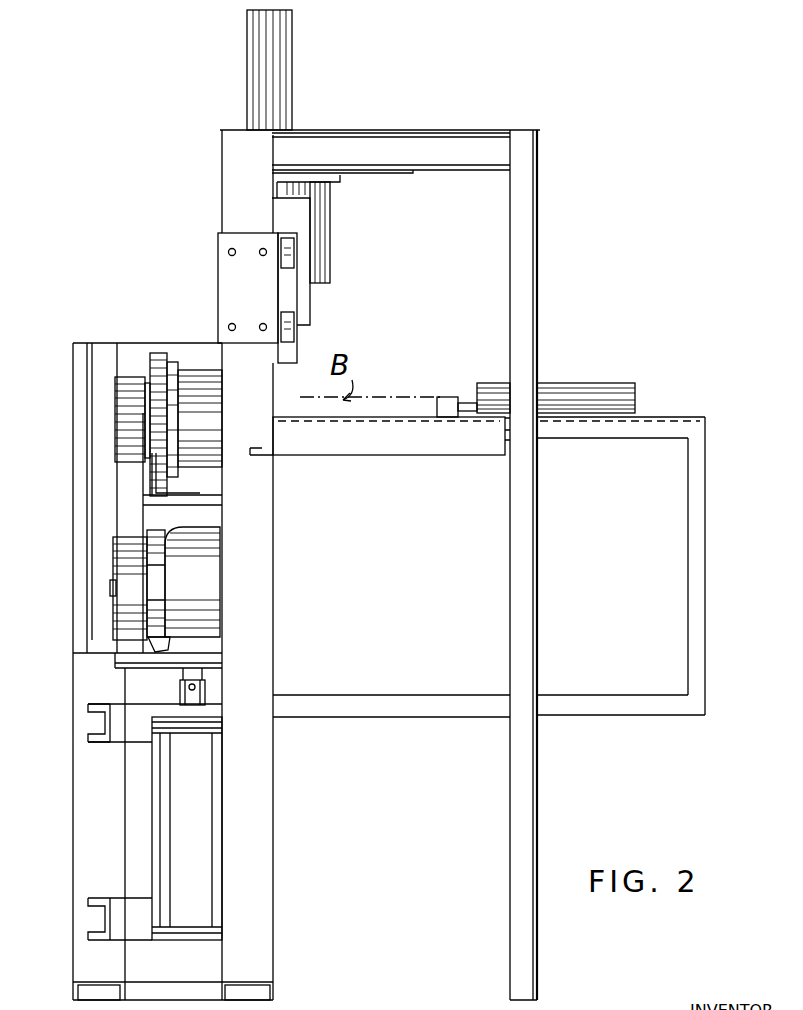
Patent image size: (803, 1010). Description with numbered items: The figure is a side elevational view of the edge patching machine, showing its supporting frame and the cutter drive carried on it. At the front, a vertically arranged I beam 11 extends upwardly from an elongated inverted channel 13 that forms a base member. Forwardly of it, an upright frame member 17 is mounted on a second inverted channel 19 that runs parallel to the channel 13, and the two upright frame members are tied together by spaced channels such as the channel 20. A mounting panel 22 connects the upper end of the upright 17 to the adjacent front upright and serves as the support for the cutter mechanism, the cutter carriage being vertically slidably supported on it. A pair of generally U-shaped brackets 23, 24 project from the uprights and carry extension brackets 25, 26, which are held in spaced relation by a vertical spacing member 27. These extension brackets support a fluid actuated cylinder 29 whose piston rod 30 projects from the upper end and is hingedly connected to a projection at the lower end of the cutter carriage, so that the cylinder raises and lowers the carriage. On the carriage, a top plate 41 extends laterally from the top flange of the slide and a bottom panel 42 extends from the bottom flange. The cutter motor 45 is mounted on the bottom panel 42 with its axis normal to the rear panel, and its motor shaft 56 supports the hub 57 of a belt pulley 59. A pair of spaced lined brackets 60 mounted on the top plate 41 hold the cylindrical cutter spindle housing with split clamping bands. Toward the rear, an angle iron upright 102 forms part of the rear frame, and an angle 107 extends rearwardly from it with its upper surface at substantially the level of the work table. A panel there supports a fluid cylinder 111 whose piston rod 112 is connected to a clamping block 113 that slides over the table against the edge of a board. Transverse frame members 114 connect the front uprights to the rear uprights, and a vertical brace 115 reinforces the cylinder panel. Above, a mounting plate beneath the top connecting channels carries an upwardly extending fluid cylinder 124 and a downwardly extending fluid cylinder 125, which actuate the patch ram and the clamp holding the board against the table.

The I beam 11 is at (258, 878).
The inverted channel 13 is at (262, 980).
The upright frame member 17 is at (90, 855).
The inverted channel 19 is at (90, 983).
The channel 20 is at (197, 985).
The mounting panel 22 is at (178, 343).
The U-shaped bracket 23 is at (125, 720).
The U-shaped bracket 24 is at (127, 918).
The extension bracket 25 is at (213, 723).
The extension bracket 26 is at (220, 936).
The vertical spacing member 27 is at (200, 823).
The fluid actuated cylinder 29 is at (160, 810).
The piston rod 30 is at (195, 711).
The top plate 41 is at (218, 500).
The bottom panel 42 is at (215, 660).
The cutter motor 45 is at (213, 580).
The motor shaft 56 is at (115, 587).
The hub 57 is at (120, 600).
The belt pulley 59 is at (115, 562).
The lined bracket 60 is at (160, 483).
The angle iron upright 102 is at (517, 549).
The angle 107 is at (598, 428).
The fluid cylinder 111 is at (597, 395).
The piston rod 112 is at (466, 402).
The clamping block 113 is at (437, 400).
The transverse frame member 114 is at (628, 700).
The vertical brace 115 is at (697, 565).
The fluid cylinder 124 is at (270, 79).
The fluid cylinder 125 is at (318, 258).